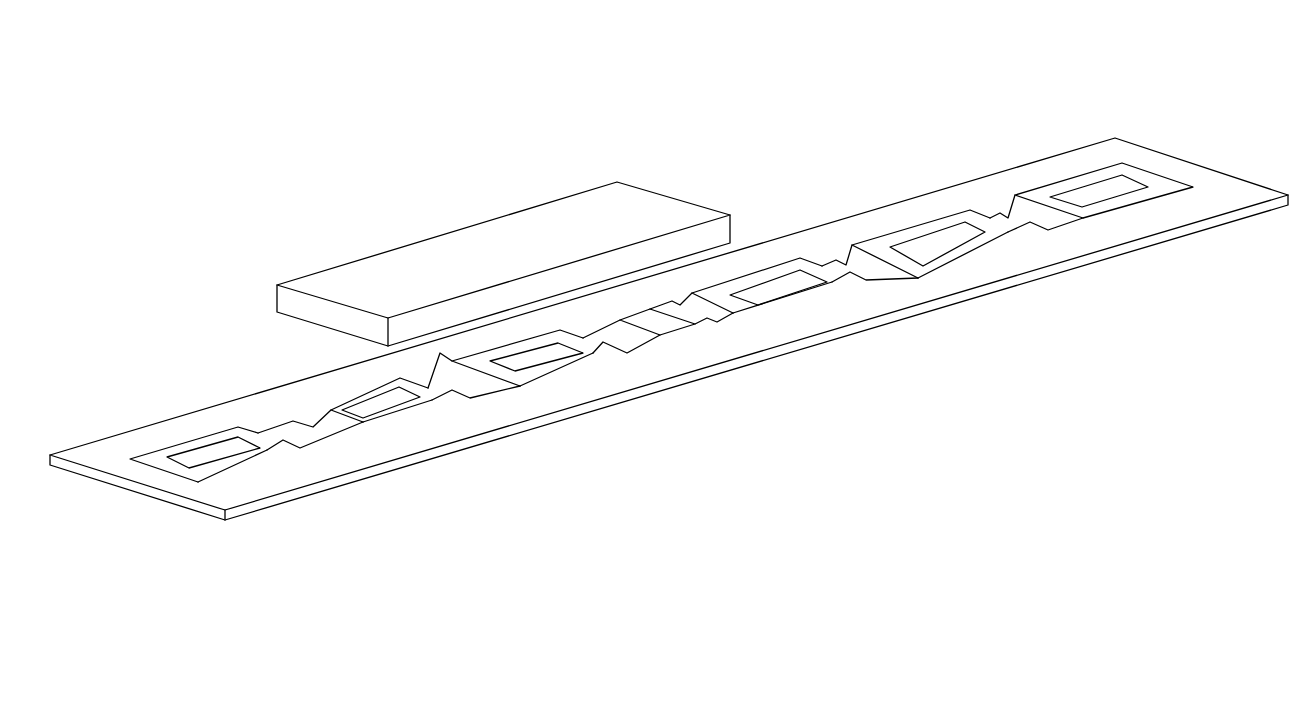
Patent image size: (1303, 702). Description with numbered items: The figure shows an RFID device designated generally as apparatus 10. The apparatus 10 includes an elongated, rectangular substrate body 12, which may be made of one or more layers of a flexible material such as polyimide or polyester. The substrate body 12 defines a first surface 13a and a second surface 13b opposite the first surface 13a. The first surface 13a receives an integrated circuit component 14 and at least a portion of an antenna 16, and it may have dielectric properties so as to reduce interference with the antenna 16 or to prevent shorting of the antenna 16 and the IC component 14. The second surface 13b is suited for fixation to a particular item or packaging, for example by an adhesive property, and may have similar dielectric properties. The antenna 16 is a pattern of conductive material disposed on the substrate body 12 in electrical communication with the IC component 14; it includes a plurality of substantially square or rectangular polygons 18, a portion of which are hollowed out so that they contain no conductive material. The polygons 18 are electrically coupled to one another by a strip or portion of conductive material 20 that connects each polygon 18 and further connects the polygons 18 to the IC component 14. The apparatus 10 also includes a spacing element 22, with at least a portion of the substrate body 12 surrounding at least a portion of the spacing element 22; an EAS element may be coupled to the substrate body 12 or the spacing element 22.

The apparatus 10 is at (804, 116).
The substrate body 12 is at (669, 313).
The first surface 13a is at (741, 341).
The second surface 13b is at (548, 423).
The integrated circuit component 14 is at (652, 318).
The antenna 16 is at (657, 303).
The polygons 18 is at (177, 447).
The portion of conductive material 20 is at (293, 432).
The spacing element 22 is at (450, 250).